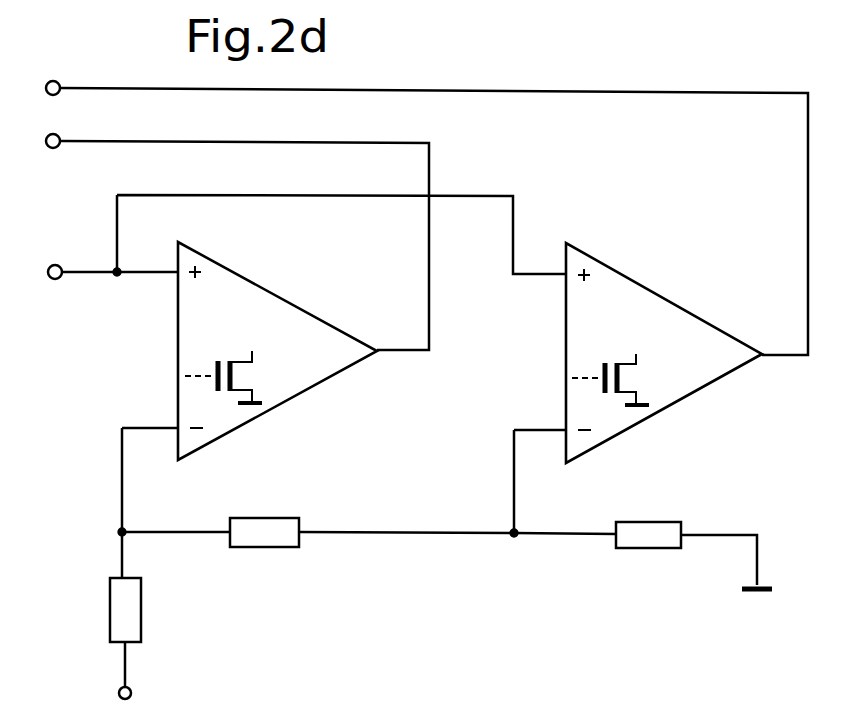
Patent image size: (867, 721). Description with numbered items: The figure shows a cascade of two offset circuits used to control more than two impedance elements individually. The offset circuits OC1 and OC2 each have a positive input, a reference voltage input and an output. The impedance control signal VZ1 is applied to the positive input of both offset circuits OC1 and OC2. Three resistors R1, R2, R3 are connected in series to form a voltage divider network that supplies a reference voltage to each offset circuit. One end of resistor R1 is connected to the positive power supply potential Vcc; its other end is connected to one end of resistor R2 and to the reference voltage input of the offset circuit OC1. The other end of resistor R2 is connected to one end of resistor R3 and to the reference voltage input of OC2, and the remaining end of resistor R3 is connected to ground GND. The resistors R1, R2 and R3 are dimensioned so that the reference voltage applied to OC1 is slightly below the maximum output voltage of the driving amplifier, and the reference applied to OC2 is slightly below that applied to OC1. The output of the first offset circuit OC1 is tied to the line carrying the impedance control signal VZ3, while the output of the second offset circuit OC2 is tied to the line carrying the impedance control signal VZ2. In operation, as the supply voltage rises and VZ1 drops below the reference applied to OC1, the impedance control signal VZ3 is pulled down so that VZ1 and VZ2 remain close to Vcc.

The impedance control signal VZ1 is at (55, 279).
The impedance control signal VZ2 is at (52, 81).
The impedance control signal VZ3 is at (51, 148).
The first offset circuit OC1 is at (291, 301).
The second offset circuit OC2 is at (668, 297).
The resistor R1 is at (142, 608).
The resistor R2 is at (270, 550).
The resistor R3 is at (647, 552).
The ground GND is at (783, 583).
The positive power supply potential Vcc is at (148, 695).